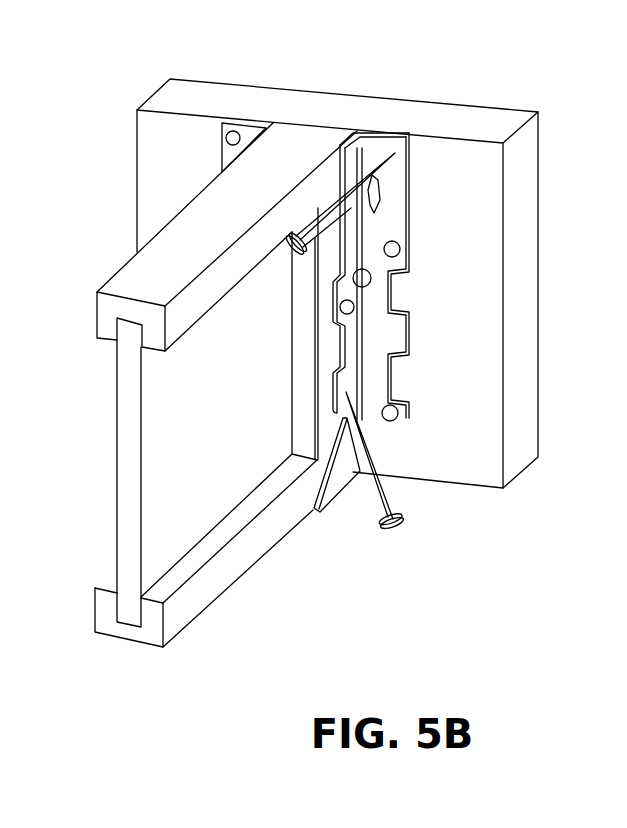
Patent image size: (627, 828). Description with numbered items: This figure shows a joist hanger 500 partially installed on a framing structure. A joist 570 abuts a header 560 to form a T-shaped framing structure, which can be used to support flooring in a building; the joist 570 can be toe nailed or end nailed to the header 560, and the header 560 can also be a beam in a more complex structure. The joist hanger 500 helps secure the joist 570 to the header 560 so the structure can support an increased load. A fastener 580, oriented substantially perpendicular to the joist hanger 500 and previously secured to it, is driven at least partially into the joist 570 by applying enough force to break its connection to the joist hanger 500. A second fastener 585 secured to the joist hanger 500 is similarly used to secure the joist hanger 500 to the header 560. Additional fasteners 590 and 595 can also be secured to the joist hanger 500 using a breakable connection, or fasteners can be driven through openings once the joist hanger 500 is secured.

The joist hanger 500 is at (393, 222).
The header 560 is at (470, 370).
The joist 570 is at (218, 437).
The fastener 580 is at (389, 534).
The second fastener 585 is at (294, 236).
The fastener 590 is at (395, 420).
The fastener 595 is at (227, 120).